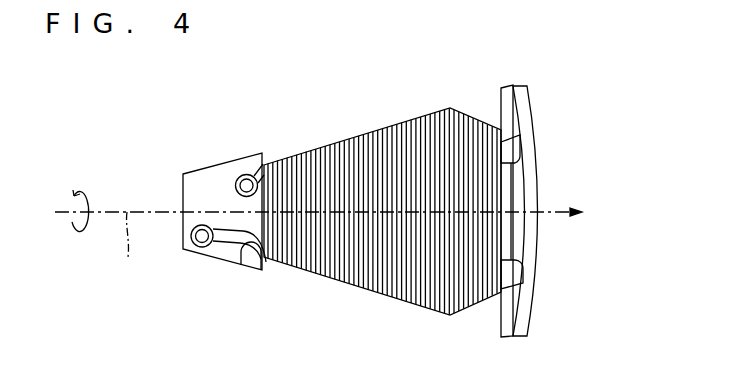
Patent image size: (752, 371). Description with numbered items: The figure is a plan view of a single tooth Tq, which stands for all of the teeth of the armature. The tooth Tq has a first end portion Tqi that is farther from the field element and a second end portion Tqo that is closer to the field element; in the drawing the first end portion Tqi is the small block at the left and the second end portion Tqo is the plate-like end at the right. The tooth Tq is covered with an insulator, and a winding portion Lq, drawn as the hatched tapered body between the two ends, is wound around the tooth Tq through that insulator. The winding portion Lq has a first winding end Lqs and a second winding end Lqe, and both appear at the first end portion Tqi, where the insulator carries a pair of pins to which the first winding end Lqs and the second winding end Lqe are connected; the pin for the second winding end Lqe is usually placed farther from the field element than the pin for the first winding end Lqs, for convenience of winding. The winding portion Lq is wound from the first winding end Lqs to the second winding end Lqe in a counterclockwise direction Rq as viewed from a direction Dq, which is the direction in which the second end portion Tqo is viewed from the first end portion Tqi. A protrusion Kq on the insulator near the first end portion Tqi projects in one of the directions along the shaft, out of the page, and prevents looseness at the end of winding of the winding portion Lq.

The first end portion Tqi is at (183, 203).
The winding portion Lq is at (382, 128).
The first winding end Lqs is at (243, 173).
The second winding end Lqe is at (221, 228).
The protrusion Kq is at (252, 268).
The counterclockwise direction Rq is at (72, 230).
The direction Dq is at (129, 250).
The second end portion Tqo is at (540, 243).
The tooth Tq is at (537, 322).